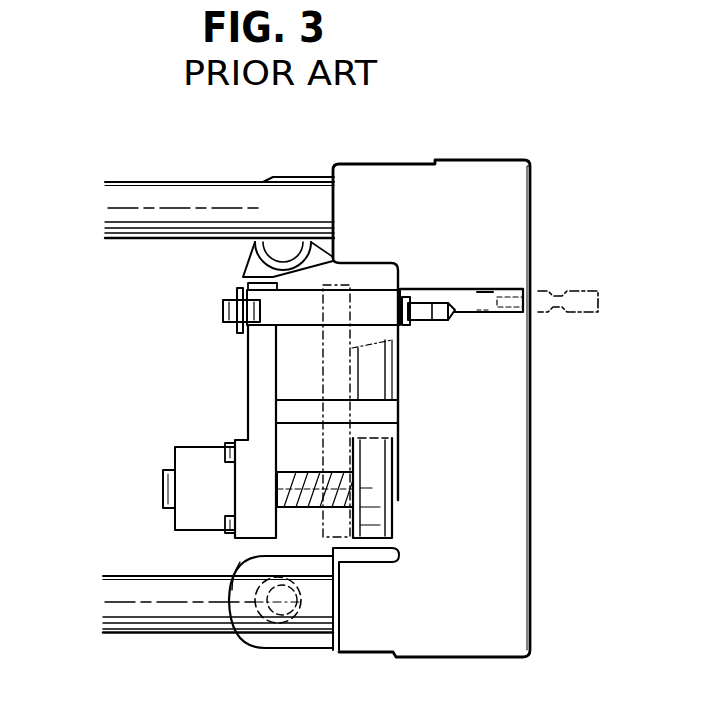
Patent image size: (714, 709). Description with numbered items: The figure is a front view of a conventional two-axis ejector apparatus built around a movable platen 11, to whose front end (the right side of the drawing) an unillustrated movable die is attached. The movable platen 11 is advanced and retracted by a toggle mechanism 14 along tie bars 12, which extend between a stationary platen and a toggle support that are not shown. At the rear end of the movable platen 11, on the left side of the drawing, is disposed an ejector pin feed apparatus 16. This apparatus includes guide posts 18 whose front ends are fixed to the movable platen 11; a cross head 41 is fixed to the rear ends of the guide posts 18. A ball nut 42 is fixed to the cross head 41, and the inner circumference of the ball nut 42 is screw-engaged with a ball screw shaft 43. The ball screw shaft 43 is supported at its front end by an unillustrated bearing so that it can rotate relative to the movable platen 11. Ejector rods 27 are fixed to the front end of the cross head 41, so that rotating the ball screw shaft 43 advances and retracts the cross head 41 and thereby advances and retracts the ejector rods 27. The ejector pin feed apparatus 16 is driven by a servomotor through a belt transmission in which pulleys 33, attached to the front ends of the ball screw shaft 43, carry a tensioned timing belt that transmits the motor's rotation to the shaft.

The movable platen 11 is at (470, 208).
The tie bars 12 is at (177, 197).
The toggle mechanism 14 is at (252, 560).
The ejector pin feed apparatus 16 is at (184, 415).
The guide posts 18 is at (300, 305).
The ejector rods 27 is at (490, 312).
The pulleys 33 is at (392, 505).
The cross head 41 is at (248, 375).
The ball nut 42 is at (187, 515).
The ball screw shaft 43 is at (307, 513).